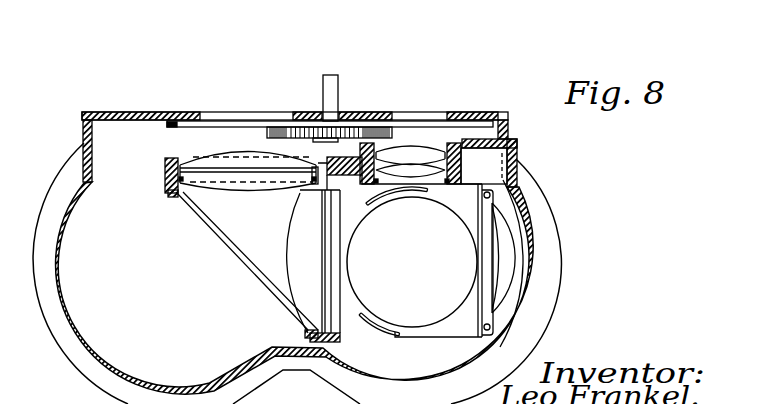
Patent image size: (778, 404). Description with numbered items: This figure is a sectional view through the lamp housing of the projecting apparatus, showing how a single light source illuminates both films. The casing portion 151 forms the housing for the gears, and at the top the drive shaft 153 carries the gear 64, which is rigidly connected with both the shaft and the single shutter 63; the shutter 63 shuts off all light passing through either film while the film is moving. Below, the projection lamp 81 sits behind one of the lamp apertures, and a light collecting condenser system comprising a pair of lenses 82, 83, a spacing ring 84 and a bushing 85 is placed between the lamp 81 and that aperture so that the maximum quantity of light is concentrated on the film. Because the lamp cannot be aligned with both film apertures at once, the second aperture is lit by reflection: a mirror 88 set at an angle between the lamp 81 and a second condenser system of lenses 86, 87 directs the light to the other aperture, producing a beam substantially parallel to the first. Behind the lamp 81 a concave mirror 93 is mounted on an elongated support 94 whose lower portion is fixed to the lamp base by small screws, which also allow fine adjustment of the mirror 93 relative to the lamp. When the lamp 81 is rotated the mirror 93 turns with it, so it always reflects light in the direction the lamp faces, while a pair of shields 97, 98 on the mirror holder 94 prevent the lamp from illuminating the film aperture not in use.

The casing portion 151 is at (84, 113).
The drive shaft 153 is at (340, 75).
The shutter 63 is at (199, 124).
The gear 64 is at (375, 126).
The lens 87 is at (228, 182).
The mirror 88 is at (224, 243).
The lens 86 is at (302, 247).
The lens 82 is at (421, 173).
The lens 83 is at (419, 153).
The bushing 85 is at (386, 174).
The spacing ring 84 is at (452, 150).
The projection lamp 81 is at (466, 233).
The shield 98 is at (400, 194).
The shield 97 is at (408, 319).
The concave mirror 93 is at (518, 245).
The elongated support 94 is at (486, 312).